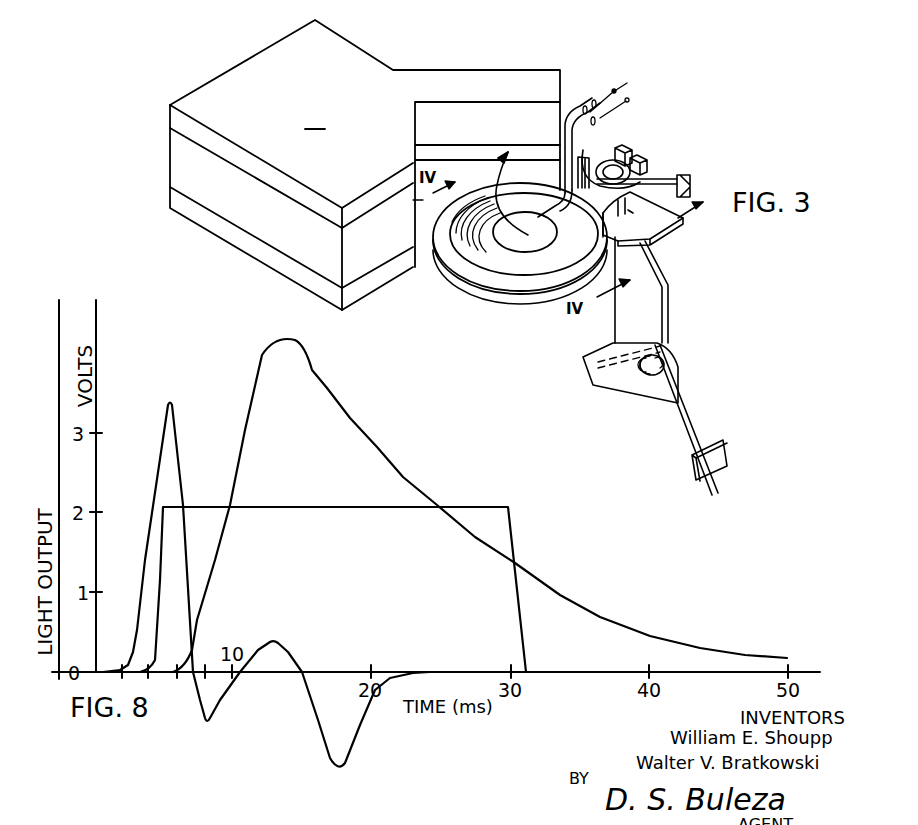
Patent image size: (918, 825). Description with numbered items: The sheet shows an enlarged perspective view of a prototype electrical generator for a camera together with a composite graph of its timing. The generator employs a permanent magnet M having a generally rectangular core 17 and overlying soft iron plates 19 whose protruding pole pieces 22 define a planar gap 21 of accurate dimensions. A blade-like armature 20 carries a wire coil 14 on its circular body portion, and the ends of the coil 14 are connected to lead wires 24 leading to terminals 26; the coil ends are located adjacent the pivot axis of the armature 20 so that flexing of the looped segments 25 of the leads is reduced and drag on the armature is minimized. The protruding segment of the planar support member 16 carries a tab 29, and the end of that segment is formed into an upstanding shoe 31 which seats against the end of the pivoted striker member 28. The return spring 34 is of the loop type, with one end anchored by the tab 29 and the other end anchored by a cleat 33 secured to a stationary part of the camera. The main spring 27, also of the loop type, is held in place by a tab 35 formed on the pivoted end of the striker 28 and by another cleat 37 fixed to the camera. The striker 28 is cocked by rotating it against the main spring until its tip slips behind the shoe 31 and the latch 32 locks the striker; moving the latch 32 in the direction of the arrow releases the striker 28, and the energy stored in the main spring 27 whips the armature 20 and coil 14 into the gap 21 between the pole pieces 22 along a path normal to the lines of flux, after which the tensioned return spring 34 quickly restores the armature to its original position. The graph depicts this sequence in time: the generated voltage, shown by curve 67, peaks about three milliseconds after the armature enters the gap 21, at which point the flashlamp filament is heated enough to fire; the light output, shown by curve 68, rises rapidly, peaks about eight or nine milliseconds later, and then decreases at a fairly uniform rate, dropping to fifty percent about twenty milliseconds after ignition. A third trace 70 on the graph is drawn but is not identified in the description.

In FIG. 3, the wire coil 14 is at (550, 267).
In FIG. 3, the planar support member 16 is at (499, 288).
In FIG. 3, the rectangular core 17 is at (172, 150).
In FIG. 3, the soft iron plates 19 is at (243, 64).
In FIG. 3, the blade-like armature 20 is at (460, 281).
In FIG. 3, the planar gap 21 is at (452, 150).
In FIG. 3, the pole pieces 22 is at (487, 80).
In FIG. 3, the lead wires 24 is at (562, 120).
In FIG. 3, the looped segments 25 is at (594, 101).
In FIG. 3, the terminals 26 is at (627, 83).
In FIG. 3, the main spring 27 is at (693, 400).
In FIG. 3, the pivoted striker member 28 is at (655, 278).
In FIG. 3, the tab 29 is at (585, 150).
In FIG. 3, the upstanding shoe 31 is at (645, 157).
In FIG. 3, the latch 32 is at (683, 224).
In FIG. 3, the cleat 33 is at (692, 181).
In FIG. 3, the return spring 34 is at (664, 178).
In FIG. 3, the tab 35 is at (602, 347).
In FIG. 3, the cleat 37 is at (724, 455).
In FIG. 8, the voltage curve 67 is at (173, 410).
In FIG. 8, the light output curve 68 is at (327, 391).
In FIG. 8, the gating pulse curve 70 is at (478, 505).